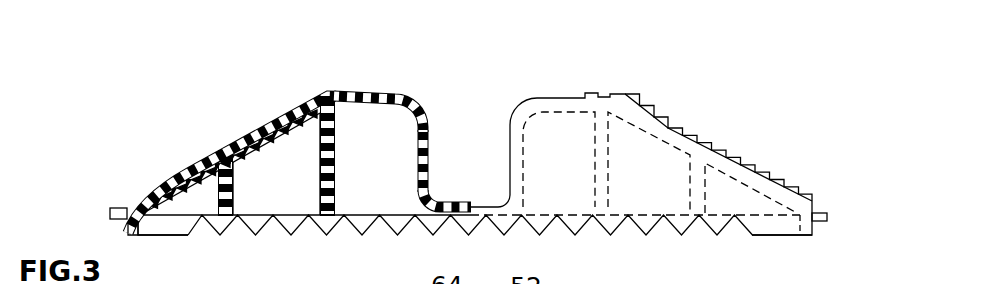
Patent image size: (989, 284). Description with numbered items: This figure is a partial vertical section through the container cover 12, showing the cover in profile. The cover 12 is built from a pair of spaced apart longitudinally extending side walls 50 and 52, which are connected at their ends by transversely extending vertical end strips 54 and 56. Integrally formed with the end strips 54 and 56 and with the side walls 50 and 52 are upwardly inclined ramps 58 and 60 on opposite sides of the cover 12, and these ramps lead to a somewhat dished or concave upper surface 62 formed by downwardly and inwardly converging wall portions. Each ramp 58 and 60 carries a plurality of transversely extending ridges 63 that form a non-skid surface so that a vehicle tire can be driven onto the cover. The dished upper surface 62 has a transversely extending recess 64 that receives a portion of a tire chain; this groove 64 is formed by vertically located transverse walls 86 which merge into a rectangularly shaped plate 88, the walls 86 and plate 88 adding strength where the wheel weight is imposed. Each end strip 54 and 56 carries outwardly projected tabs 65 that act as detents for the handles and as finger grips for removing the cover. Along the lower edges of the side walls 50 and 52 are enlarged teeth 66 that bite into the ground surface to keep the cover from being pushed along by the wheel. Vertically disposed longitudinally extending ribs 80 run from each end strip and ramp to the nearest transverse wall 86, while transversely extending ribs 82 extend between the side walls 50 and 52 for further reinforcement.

The container cover 12 is at (286, 86).
The side wall 50 is at (278, 198).
The side wall 52 is at (643, 200).
The end strip 54 is at (128, 232).
The end strip 56 is at (813, 227).
The upwardly inclined ramp 58 is at (218, 135).
The upwardly inclined ramp 60 is at (706, 120).
The dished upper surface 62 is at (371, 101).
The transversely extending ridges 63 is at (184, 182).
The transversely extending recess 64 is at (469, 124).
The outwardly projected tab 65 is at (125, 212).
The enlarged teeth 66 is at (377, 230).
The longitudinally extending ribs 80 is at (378, 134).
The transversely extending ribs 82 is at (335, 148).
The transverse walls 86 is at (428, 153).
The rectangularly shaped plate 88 is at (450, 203).